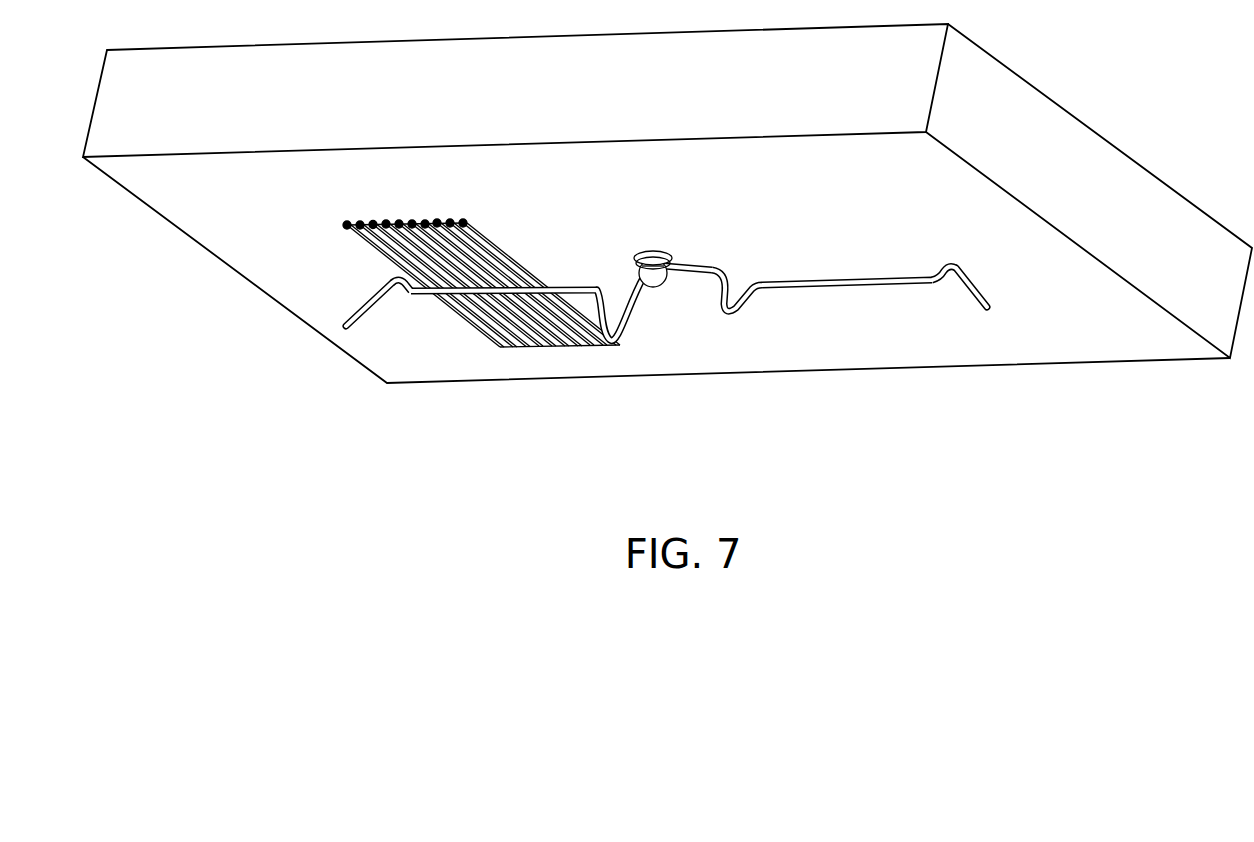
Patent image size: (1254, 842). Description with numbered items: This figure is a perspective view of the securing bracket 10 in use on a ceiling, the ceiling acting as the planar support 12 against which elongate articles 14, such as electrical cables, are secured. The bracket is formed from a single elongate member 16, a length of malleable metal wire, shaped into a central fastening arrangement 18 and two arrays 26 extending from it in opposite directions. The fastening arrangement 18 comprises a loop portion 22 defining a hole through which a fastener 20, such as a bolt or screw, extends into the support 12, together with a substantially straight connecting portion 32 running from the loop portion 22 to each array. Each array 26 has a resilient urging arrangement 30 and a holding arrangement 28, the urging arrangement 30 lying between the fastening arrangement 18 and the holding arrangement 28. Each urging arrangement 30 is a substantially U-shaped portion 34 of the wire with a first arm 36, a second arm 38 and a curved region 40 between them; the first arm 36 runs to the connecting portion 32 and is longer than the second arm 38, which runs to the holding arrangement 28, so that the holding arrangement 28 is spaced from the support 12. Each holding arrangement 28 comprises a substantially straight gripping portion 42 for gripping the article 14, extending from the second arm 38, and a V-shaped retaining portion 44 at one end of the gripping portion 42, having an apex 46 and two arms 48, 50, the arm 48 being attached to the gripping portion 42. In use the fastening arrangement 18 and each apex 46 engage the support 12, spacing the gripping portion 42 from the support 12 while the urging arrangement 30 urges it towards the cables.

The securing bracket 10 is at (850, 322).
The support 12 is at (1117, 343).
The articles 14 is at (481, 236).
The elongate member 16 is at (712, 264).
The fastening arrangement 18 is at (657, 247).
The fastener 20 is at (657, 287).
The loop portion 22 is at (667, 250).
The arrays 26 is at (460, 314).
The holding arrangement 28 is at (500, 313).
The resilient urging arrangement 30 is at (612, 345).
The connecting portion 32 is at (690, 280).
The U-shaped portion 34 is at (607, 326).
The first arm 36 is at (612, 298).
The second arm 38 is at (597, 308).
The curved region 40 is at (601, 292).
The gripping portion 42 is at (432, 298).
The retaining portion 44 is at (355, 303).
The apex 46 is at (396, 283).
The arm 48 is at (403, 300).
The arm 50 is at (362, 324).